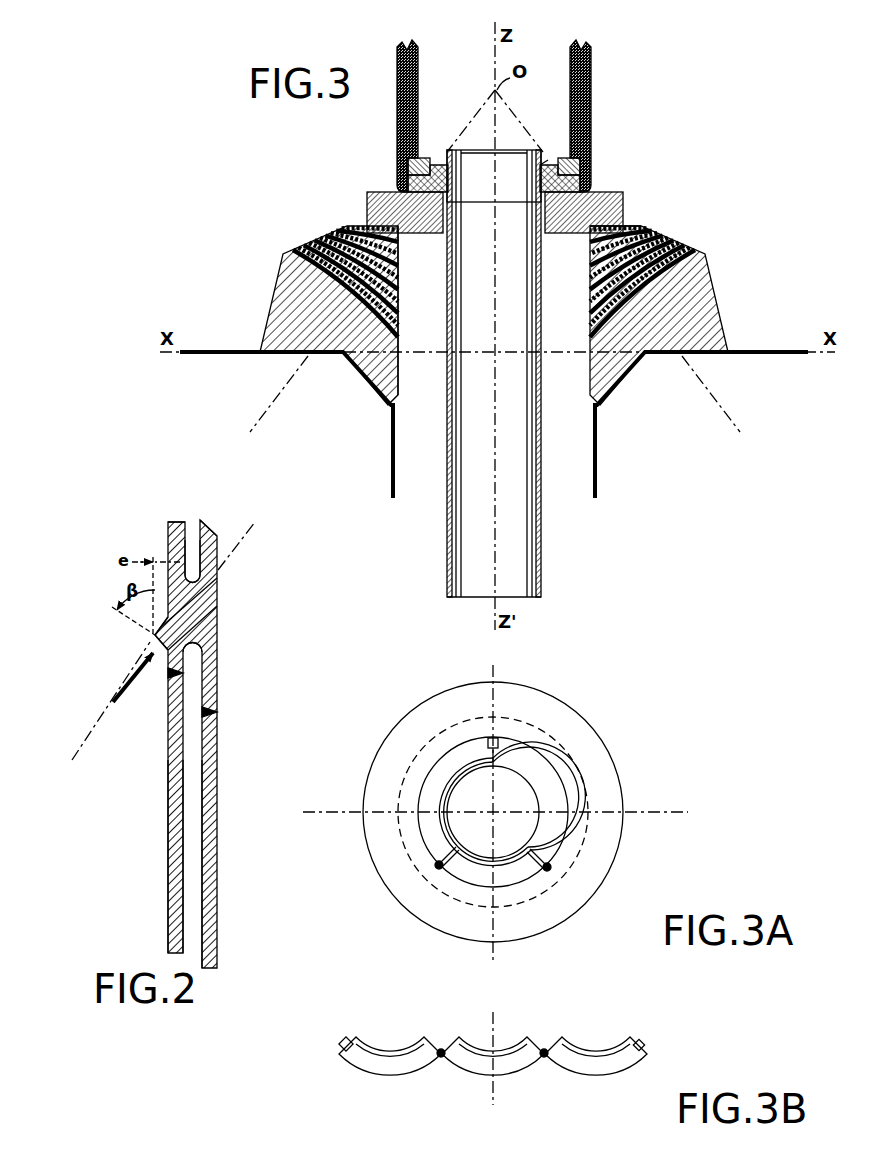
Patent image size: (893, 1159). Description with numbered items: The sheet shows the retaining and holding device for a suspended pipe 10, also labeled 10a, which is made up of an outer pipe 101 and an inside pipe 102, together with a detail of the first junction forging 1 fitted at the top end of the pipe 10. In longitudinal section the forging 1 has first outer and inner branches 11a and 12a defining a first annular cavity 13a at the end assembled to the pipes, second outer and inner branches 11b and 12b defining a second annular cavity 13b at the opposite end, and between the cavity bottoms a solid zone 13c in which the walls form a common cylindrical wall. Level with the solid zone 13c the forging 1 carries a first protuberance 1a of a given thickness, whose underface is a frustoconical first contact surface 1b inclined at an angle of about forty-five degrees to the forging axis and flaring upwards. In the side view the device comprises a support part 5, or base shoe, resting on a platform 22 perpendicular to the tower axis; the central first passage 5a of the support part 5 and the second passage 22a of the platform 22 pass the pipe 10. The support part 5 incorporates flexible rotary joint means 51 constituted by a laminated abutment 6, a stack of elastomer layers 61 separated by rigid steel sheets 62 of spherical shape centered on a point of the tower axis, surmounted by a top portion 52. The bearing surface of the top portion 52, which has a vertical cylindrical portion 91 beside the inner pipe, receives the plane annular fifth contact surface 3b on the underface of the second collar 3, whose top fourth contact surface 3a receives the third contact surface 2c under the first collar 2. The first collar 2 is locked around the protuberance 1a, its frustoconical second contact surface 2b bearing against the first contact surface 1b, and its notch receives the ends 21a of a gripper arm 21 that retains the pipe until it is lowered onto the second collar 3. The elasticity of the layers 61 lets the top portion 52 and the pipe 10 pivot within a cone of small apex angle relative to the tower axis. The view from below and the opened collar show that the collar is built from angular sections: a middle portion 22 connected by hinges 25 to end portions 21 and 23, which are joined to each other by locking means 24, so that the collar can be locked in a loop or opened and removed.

In FIG. 3, the first junction forging 1 is at (460, 176).
In FIG. 2, the first junction forging 1 is at (102, 612).
In FIG. 2, the first protuberance 1a is at (152, 630).
In FIG. 3, the first contact surface of revolution 1b is at (545, 134).
In FIG. 2, the first contact surface of revolution 1b is at (160, 642).
In FIG. 3, the first collar 2 is at (439, 168).
In FIG. 3, the second contact surface of revolution 2b is at (548, 176).
In FIG. 3, the third contact surface 2c is at (570, 256).
In FIG. 3, the second collar 3 is at (453, 244).
In FIG. 3A, the second collar 3 is at (578, 740).
In FIG. 3, the fourth contact surface of revolution 3a is at (560, 234).
In FIG. 3, the fifth contact surface of revolution 3b is at (363, 210).
In FIG. 3, the support part 5 is at (469, 288).
In FIG. 3, the first passage 5a is at (436, 306).
In FIG. 3, the flexible rotary joint means 51 is at (306, 238).
In FIG. 3, the top portion of the support part 52 is at (637, 228).
In FIG. 3, the laminated abutment 6 is at (646, 254).
In FIG. 3, the elastomer layers 61 is at (642, 288).
In FIG. 3, the rigid sheets 62 is at (629, 253).
In FIG. 3, the vertical cylindrical portion 91 is at (367, 211).
In FIG. 3, the pipe 10 is at (515, 373).
In FIG. 3, the tube wall 10a is at (515, 373).
In FIG. 2, the tube wall 10a is at (168, 829).
In FIG. 3, the outer pipe 101 is at (446, 556).
In FIG. 2, the outer pipe 101 is at (172, 890).
In FIG. 3, the inside pipe 102 is at (463, 556).
In FIG. 2, the inside pipe 102 is at (212, 890).
In FIG. 2, the first outer branch 11a is at (190, 657).
In FIG. 2, the second outer branch 11b is at (173, 532).
In FIG. 2, the first inner branch 12a is at (213, 706).
In FIG. 2, the second inner branch 12b is at (211, 523).
In FIG. 2, the first annular cavity 13a is at (191, 680).
In FIG. 2, the second annular cavity 13b is at (191, 578).
In FIG. 2, the solid zone 13c is at (198, 620).
In FIG. 3, the gripper arm 21 is at (398, 104).
In FIG. 3A, the gripper arm 21 is at (556, 796).
In FIG. 3B, the gripper arm 21 is at (383, 1064).
In FIG. 3, the ends of the gripper arm 21a is at (405, 170).
In FIG. 3, the platform 22 is at (765, 350).
In FIG. 3A, the platform 22 is at (520, 870).
In FIG. 3B, the platform 22 is at (475, 1064).
In FIG. 3, the second passage 22a is at (440, 456).
In FIG. 3A, the end portion of the collar 23 is at (438, 770).
In FIG. 3B, the end portion of the collar 23 is at (599, 1064).
In FIG. 3A, the locking means 24 is at (500, 743).
In FIG. 3B, the locking means 24 is at (340, 1045).
In FIG. 3A, the hinges 25 is at (551, 867).
In FIG. 3B, the hinges 25 is at (439, 1058).